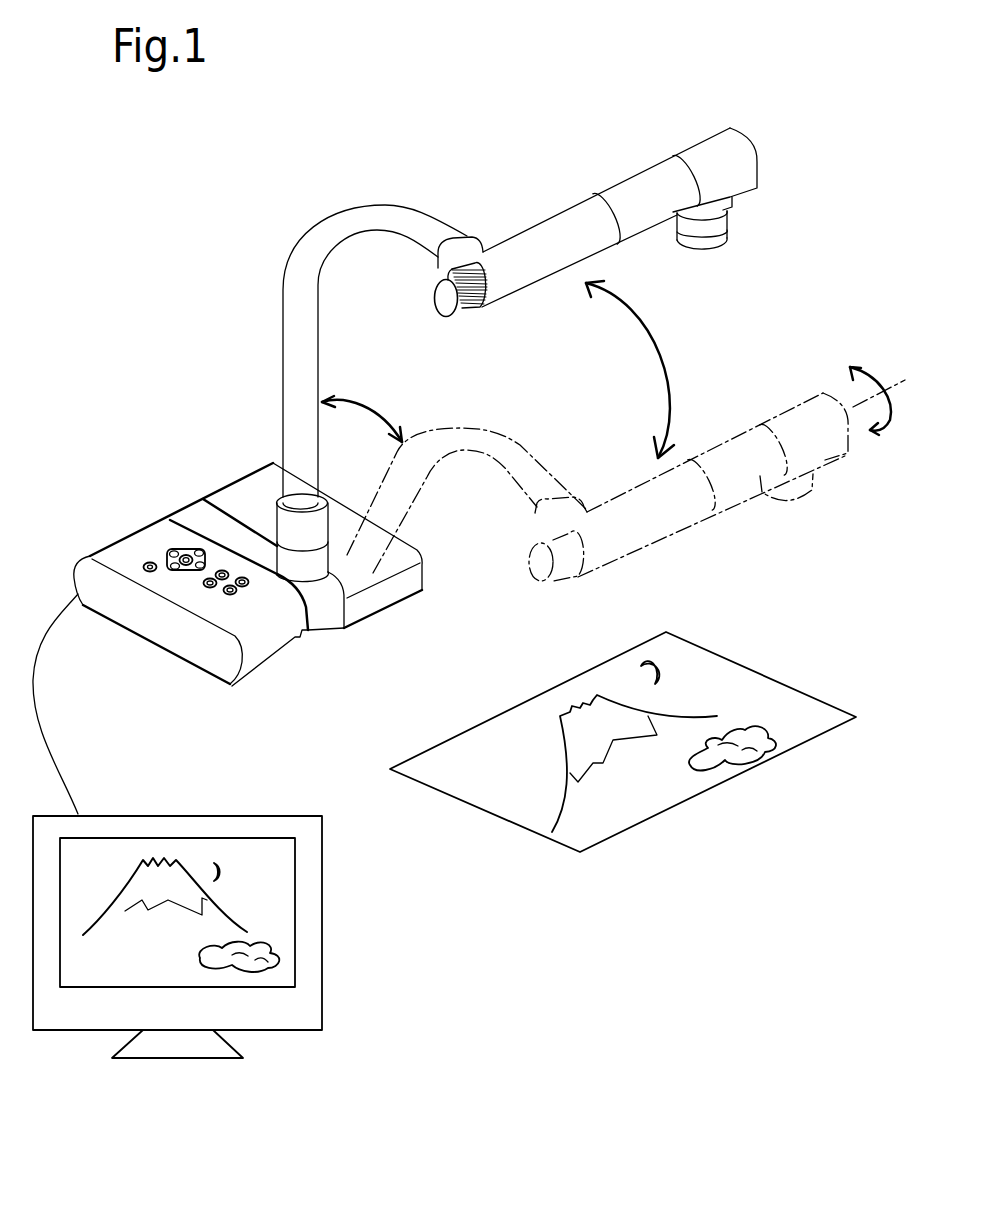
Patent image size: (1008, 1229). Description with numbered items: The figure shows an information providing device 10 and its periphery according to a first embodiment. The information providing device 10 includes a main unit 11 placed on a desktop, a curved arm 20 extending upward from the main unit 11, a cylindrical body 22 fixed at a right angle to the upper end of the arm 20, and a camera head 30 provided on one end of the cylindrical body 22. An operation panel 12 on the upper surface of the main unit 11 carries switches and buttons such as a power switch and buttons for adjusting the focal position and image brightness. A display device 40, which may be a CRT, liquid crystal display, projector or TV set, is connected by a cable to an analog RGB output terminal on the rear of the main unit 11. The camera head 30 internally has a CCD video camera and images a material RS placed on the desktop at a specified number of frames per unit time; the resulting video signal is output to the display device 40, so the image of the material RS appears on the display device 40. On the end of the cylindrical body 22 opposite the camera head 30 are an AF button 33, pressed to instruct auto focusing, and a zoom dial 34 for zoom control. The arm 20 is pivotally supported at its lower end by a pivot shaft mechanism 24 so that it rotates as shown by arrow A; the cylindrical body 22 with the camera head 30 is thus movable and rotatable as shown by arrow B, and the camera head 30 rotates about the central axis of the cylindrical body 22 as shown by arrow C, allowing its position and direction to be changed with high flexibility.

The information providing device 10 is at (158, 493).
The main unit 11 is at (133, 536).
The operation panel 12 is at (180, 579).
The arm 20 is at (281, 354).
The cylindrical body 22 is at (540, 240).
The pivot shaft mechanism 24 is at (330, 586).
The camera head 30 is at (757, 175).
The AF button 33 is at (446, 300).
The zoom dial 34 is at (484, 302).
The display device 40 is at (322, 905).
The material RS is at (740, 664).
The arrow A is at (350, 396).
The arrow B is at (663, 352).
The arrow C is at (856, 362).